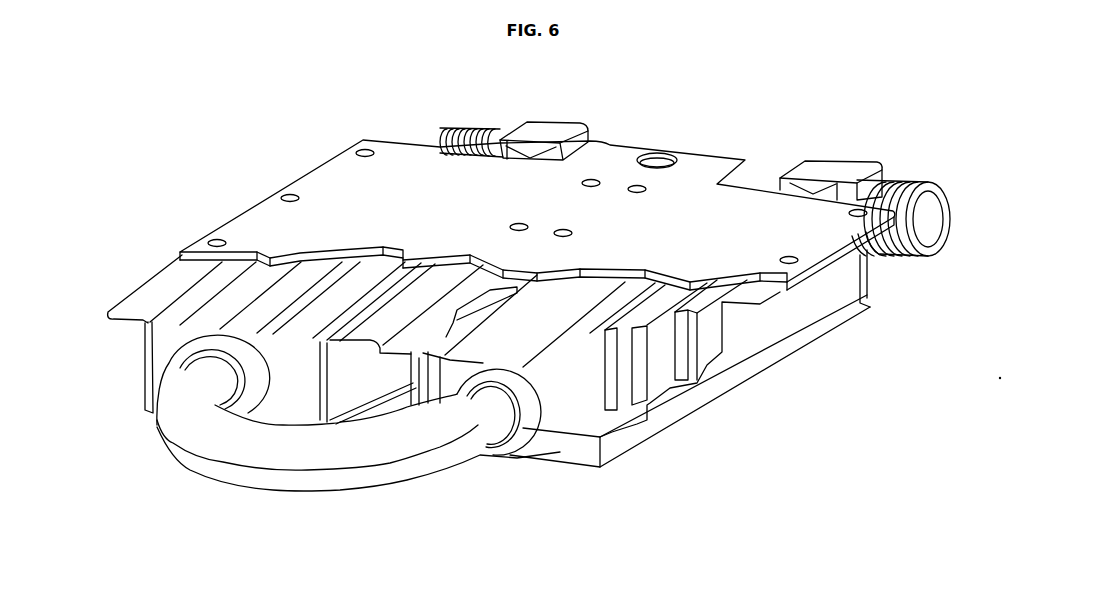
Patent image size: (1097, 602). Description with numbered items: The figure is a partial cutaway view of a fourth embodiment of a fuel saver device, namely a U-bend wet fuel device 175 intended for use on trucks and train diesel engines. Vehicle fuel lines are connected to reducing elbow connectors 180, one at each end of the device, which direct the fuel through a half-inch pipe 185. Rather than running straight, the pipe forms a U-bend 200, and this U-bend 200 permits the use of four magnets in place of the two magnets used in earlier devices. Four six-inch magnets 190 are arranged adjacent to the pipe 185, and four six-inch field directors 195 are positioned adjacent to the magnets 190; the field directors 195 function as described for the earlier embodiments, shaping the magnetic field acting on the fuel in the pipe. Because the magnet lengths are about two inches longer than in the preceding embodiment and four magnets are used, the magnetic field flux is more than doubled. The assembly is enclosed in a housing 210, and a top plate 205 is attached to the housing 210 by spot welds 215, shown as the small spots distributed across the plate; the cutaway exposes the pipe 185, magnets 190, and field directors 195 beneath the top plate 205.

The U-bend wet fuel device 175 is at (832, 80).
The reducing elbow connectors 180 is at (553, 122).
The ½ pipe 185 is at (300, 297).
The magnets 190 is at (325, 292).
The field directors 195 is at (393, 290).
The U-bend 200 is at (280, 482).
The top plate 205 is at (753, 207).
The housing 210 is at (158, 287).
The spot welds 215 is at (364, 150).